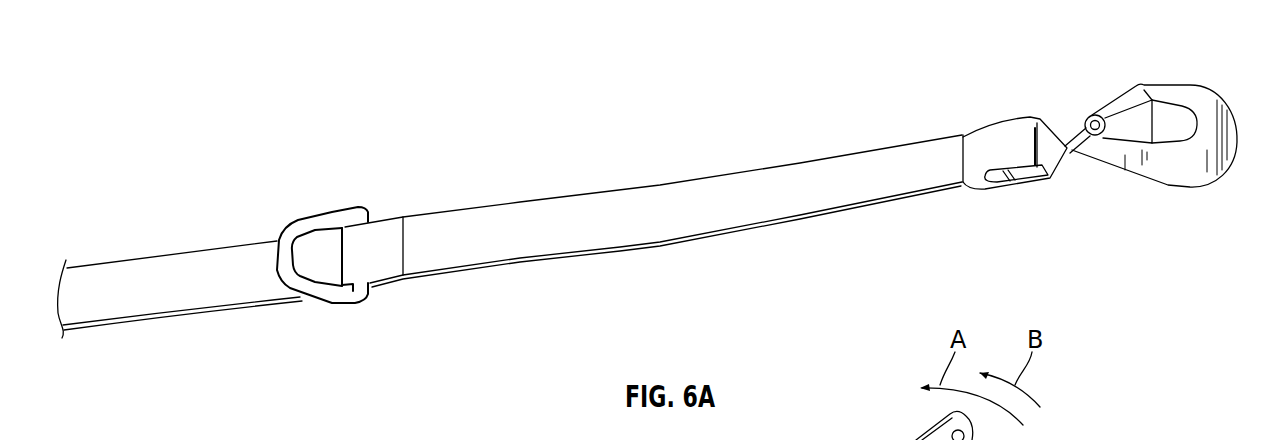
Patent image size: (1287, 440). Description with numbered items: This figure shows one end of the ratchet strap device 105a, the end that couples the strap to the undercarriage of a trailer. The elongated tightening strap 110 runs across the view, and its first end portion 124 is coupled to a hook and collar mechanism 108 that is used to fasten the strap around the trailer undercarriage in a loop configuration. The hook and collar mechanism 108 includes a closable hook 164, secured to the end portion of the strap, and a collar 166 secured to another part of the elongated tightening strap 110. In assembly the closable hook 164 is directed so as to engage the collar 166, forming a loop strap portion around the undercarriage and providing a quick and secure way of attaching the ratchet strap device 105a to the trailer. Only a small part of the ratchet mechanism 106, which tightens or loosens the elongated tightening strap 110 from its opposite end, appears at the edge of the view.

The ratchet strap device 105a is at (876, 85).
The hook and collar mechanism 108 is at (552, 182).
The elongated tightening strap 110 is at (688, 218).
The first end portion 124 is at (970, 188).
The closable hook 164 is at (1170, 170).
The collar 166 is at (312, 210).
The ratchet mechanism 106 is at (893, 425).